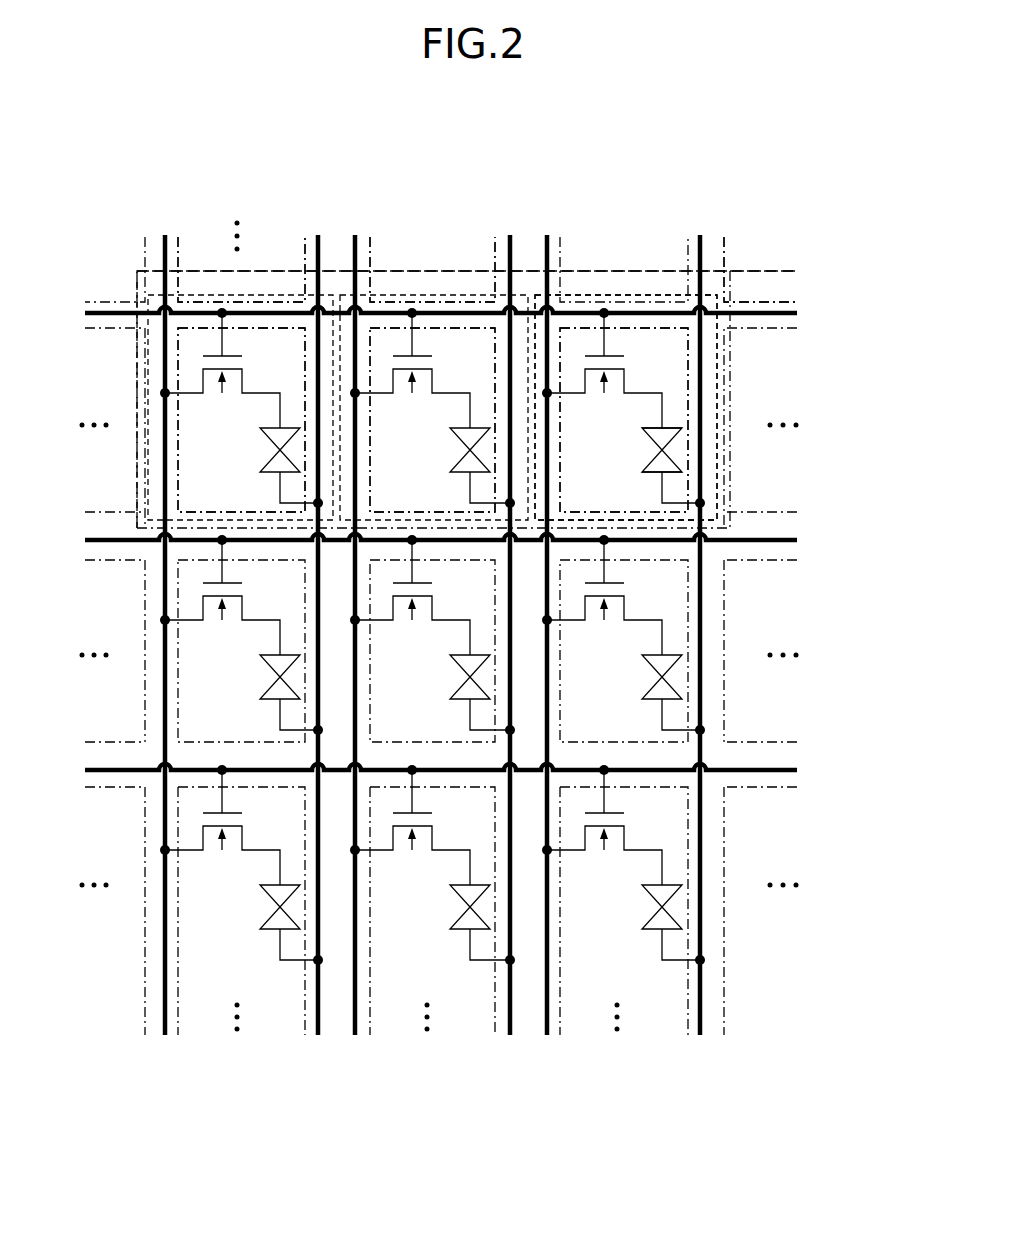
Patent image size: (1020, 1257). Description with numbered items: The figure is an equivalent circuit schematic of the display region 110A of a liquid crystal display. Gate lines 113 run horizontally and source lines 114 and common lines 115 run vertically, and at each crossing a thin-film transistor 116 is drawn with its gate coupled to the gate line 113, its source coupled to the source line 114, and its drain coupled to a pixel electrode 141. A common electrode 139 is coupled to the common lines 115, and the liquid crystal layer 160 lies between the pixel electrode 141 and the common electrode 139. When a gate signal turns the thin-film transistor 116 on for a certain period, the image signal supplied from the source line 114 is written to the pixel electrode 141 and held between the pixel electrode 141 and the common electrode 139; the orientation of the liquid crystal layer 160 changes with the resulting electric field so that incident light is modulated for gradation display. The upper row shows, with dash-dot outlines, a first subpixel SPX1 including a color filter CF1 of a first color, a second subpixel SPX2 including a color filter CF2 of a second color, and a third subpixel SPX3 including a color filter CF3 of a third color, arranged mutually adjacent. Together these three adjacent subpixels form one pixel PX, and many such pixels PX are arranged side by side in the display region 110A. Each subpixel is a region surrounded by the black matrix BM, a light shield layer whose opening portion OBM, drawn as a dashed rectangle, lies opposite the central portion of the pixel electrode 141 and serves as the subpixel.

The display region 110A is at (708, 198).
The gate line 113 is at (113, 312).
The source line 114 is at (163, 1008).
The common line 115 is at (316, 1013).
The thin-film transistor 116 is at (602, 403).
The common electrode 139 is at (662, 470).
The pixel electrode 141 is at (662, 430).
The liquid crystal layer 160 is at (650, 456).
The color filter of a first color CF1 is at (208, 343).
The color filter of a second color CF2 is at (457, 350).
The color filter of a third color CF3 is at (590, 343).
The first subpixel SPX1 is at (283, 295).
The second subpixel SPX2 is at (392, 294).
The third subpixel SPX3 is at (717, 358).
The pixel PX is at (447, 270).
The opening portion OBM is at (653, 343).
The black matrix BM is at (787, 300).